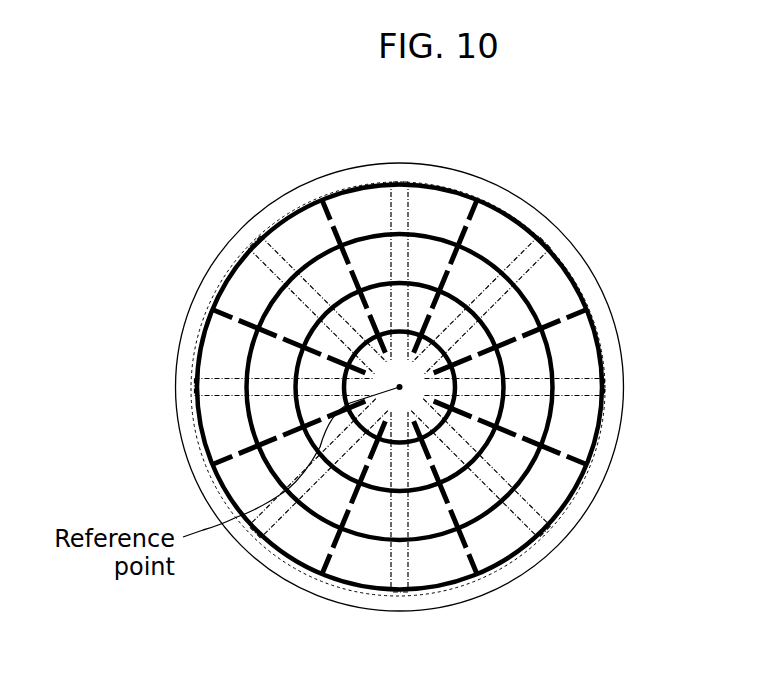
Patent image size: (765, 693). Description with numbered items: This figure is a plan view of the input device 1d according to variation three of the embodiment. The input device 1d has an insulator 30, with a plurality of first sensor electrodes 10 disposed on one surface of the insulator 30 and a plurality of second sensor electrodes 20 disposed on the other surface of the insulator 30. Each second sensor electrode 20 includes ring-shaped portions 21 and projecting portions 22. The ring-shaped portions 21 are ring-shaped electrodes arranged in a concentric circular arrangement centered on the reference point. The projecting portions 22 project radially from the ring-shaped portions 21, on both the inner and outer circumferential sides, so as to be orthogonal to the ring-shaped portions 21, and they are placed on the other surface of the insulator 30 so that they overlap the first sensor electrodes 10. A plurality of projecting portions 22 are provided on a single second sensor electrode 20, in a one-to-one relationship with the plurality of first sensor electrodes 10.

The input device 1d is at (434, 166).
The first sensor electrode 10 is at (502, 207).
The second sensor electrode 20 is at (431, 382).
The ring-shaped portion 21 is at (502, 280).
The projecting portion 22 is at (547, 320).
The insulator 30 is at (623, 378).